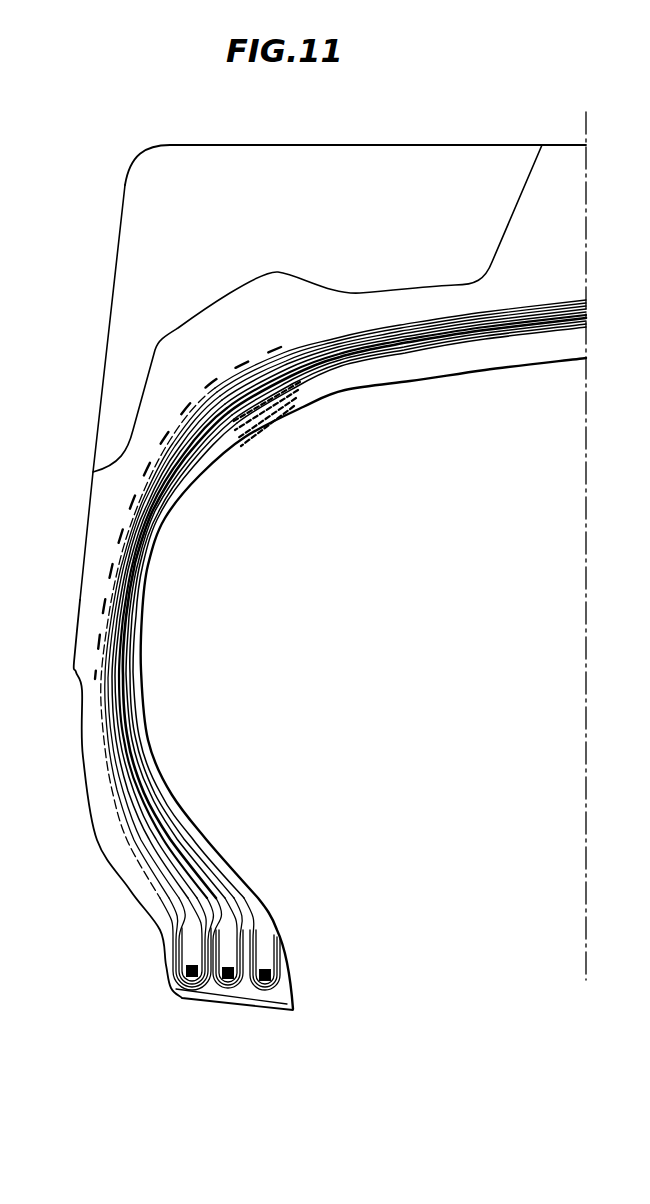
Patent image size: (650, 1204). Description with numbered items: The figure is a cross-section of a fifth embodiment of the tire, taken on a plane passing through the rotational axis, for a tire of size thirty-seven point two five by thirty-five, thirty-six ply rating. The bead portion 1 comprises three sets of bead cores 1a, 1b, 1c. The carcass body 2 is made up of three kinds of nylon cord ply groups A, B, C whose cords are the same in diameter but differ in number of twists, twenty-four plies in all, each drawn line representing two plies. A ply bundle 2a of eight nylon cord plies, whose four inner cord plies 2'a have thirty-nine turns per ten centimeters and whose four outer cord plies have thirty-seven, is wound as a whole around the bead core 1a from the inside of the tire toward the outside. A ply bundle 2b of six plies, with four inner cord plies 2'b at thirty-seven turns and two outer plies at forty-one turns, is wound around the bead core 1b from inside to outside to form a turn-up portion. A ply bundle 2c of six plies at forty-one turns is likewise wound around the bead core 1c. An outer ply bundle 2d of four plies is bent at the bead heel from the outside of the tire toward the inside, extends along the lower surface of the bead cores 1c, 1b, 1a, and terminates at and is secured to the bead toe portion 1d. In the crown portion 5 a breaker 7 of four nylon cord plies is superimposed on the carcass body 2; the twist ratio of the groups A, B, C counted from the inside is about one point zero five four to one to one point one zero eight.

The bead portion 1 is at (265, 954).
The bead core 1a is at (281, 1007).
The bead core 1b is at (226, 995).
The bead core 1c is at (177, 975).
The bead toe portion 1d is at (288, 993).
The carcass body 2 is at (345, 683).
The ply bundle 2a is at (206, 861).
The inner cord plies 2'a is at (208, 655).
The ply bundle 2b is at (212, 995).
The inner cord plies 2'b is at (266, 1005).
The ply bundle 2c is at (198, 995).
The outer ply bundle 2d is at (126, 836).
The crown portion 5 is at (475, 172).
The breaker 7 is at (548, 304).
The cord ply group A is at (300, 400).
The cord ply group B is at (293, 390).
The cord ply group C is at (287, 380).